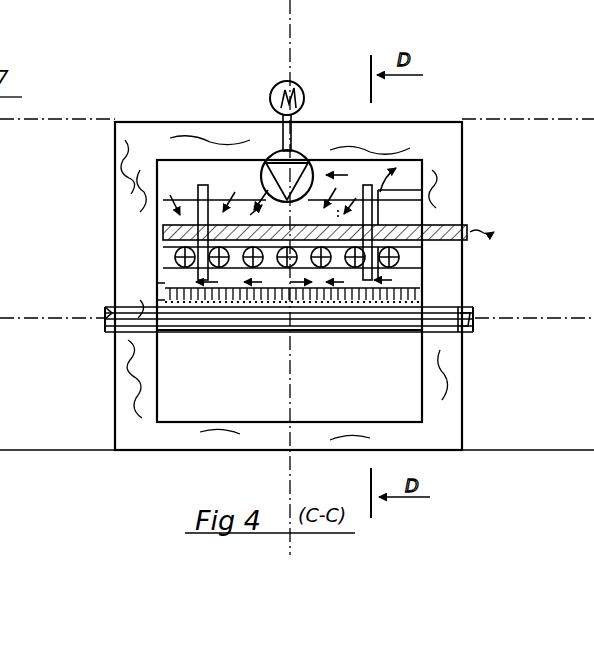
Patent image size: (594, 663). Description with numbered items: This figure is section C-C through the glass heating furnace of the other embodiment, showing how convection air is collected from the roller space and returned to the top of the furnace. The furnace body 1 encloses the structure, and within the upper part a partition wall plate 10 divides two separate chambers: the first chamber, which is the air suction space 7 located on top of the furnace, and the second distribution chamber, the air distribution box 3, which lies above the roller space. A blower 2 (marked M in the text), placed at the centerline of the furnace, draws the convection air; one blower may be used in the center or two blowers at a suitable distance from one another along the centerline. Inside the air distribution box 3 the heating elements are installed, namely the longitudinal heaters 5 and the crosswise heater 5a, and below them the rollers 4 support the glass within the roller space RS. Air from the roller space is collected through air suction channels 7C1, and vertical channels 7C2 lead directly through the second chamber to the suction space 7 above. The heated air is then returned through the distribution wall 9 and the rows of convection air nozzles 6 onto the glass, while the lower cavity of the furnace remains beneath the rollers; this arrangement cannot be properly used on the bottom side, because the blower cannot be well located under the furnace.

The housing 1 is at (360, 135).
The pump 2 is at (283, 150).
The air distribution box (second chamber) 3 is at (247, 190).
The rollers 4 is at (463, 310).
The longitudinal heaters 5 is at (467, 222).
The crosswise heater 5a is at (440, 238).
The convection air nozzle rows 6 is at (410, 292).
The air suction space (first chamber) 7 is at (440, 152).
The air suction channel 7C1 is at (160, 270).
The vertical channels 7C2 is at (198, 215).
The distribution wall 9 is at (456, 272).
The upper partition wall plate 10 is at (200, 190).
The return space RS is at (160, 305).